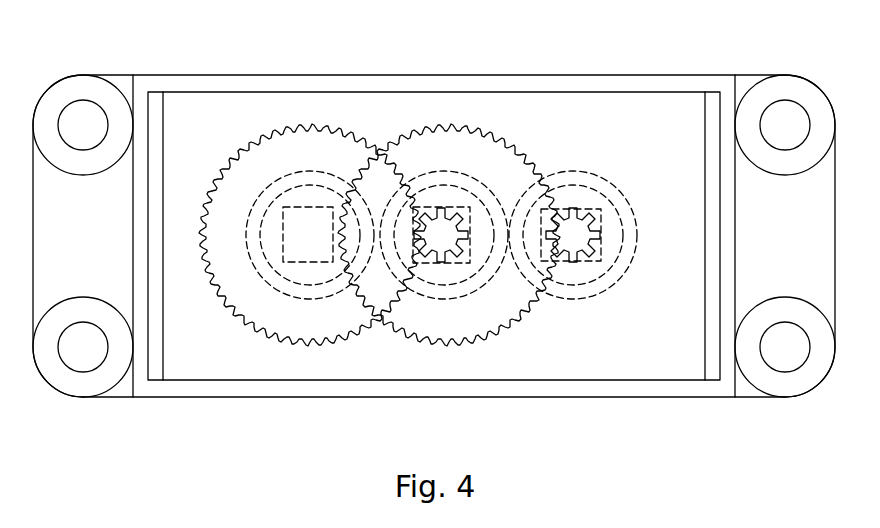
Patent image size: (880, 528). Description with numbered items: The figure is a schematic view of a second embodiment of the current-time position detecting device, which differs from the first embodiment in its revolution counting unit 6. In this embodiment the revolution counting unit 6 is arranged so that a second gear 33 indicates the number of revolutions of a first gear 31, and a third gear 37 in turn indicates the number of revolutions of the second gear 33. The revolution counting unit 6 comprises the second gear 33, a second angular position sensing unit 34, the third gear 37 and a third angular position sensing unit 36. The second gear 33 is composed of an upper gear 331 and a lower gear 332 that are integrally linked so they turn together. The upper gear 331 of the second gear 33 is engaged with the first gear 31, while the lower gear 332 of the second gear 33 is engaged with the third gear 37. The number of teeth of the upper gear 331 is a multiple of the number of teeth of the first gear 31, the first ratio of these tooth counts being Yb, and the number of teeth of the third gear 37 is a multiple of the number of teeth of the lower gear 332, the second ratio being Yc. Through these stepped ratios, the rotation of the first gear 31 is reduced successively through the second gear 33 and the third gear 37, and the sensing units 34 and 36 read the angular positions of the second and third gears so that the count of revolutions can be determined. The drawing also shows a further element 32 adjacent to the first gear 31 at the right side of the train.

The revolution counting unit 6 is at (287, 112).
The first gear 31 is at (610, 216).
The second motor 32 is at (603, 258).
The second gear 33 is at (583, 333).
The upper gear 331 is at (498, 298).
The lower gear 332 is at (461, 246).
The second angular position sensing unit 34 is at (443, 262).
The third angular position sensing unit 36 is at (290, 257).
The third gear 37 is at (312, 325).